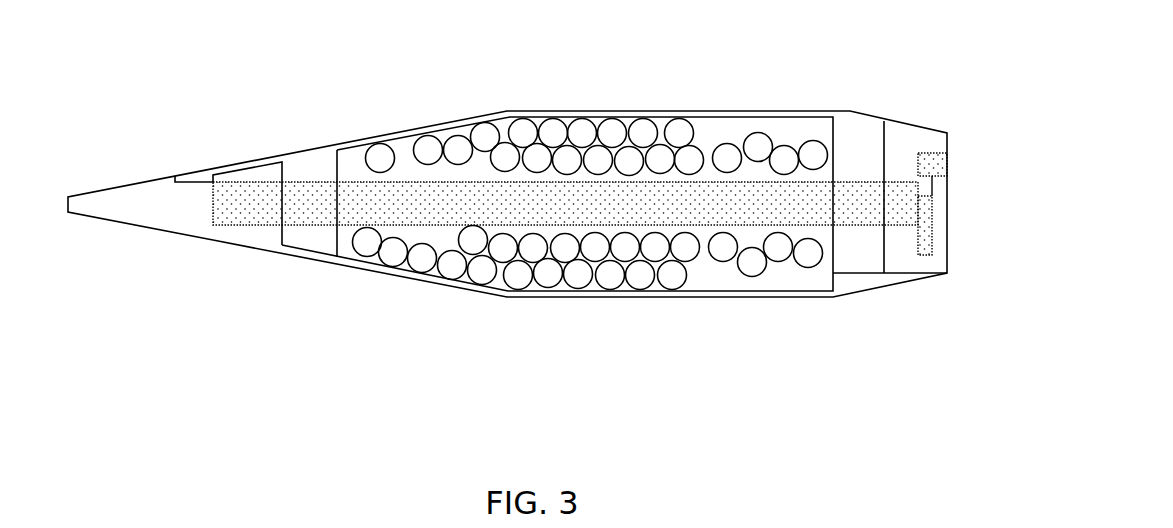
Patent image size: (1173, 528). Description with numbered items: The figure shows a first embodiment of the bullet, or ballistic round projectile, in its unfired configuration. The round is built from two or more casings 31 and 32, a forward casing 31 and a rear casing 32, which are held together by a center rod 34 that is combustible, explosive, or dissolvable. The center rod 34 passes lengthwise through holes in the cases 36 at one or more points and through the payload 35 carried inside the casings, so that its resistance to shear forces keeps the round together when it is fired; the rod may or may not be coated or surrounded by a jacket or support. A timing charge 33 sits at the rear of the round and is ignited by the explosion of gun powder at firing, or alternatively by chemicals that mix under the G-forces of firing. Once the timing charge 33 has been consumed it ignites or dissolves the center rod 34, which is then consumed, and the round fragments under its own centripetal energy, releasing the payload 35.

The casing 31 is at (183, 230).
The casing 32 is at (856, 126).
The timing charge 33 is at (960, 219).
The center rod 34 is at (806, 225).
The payload 35 is at (590, 261).
The holes in the cases 36 is at (318, 211).